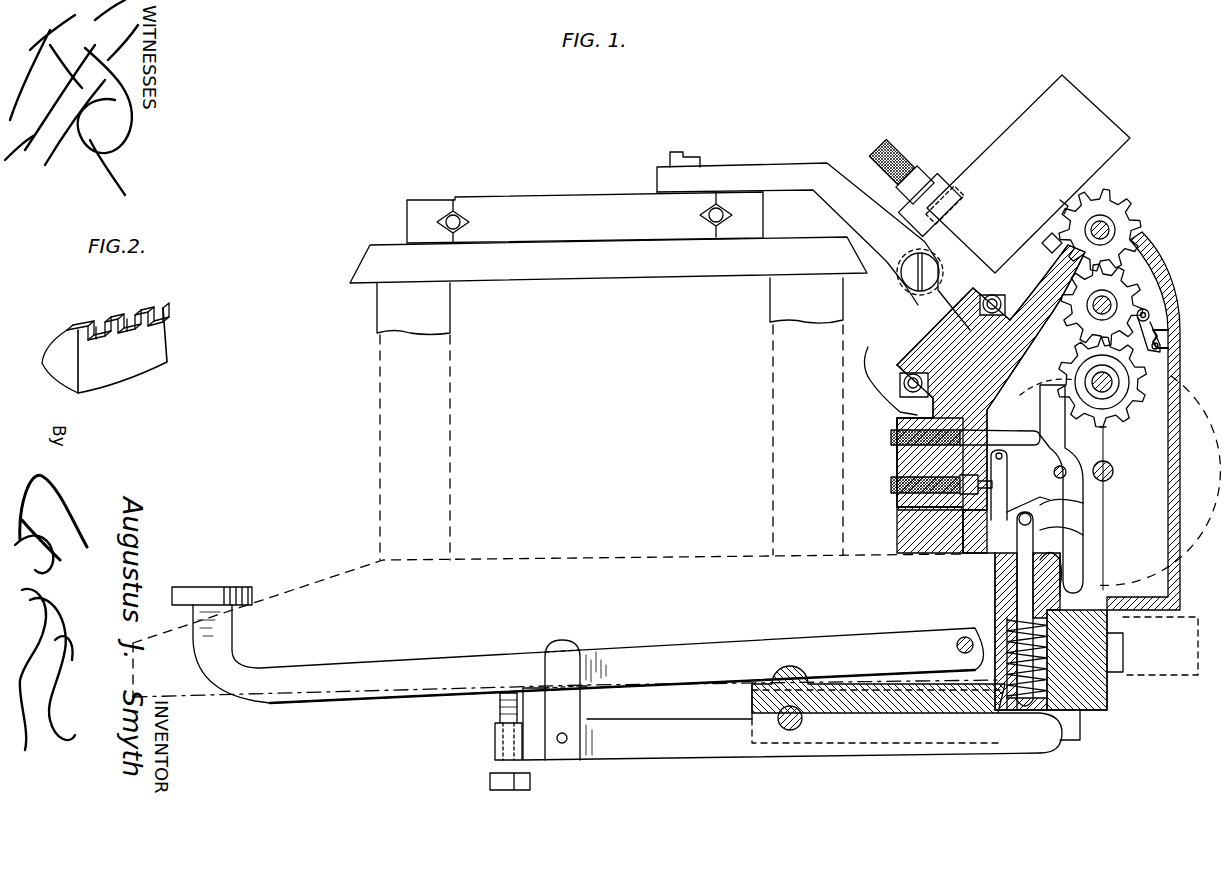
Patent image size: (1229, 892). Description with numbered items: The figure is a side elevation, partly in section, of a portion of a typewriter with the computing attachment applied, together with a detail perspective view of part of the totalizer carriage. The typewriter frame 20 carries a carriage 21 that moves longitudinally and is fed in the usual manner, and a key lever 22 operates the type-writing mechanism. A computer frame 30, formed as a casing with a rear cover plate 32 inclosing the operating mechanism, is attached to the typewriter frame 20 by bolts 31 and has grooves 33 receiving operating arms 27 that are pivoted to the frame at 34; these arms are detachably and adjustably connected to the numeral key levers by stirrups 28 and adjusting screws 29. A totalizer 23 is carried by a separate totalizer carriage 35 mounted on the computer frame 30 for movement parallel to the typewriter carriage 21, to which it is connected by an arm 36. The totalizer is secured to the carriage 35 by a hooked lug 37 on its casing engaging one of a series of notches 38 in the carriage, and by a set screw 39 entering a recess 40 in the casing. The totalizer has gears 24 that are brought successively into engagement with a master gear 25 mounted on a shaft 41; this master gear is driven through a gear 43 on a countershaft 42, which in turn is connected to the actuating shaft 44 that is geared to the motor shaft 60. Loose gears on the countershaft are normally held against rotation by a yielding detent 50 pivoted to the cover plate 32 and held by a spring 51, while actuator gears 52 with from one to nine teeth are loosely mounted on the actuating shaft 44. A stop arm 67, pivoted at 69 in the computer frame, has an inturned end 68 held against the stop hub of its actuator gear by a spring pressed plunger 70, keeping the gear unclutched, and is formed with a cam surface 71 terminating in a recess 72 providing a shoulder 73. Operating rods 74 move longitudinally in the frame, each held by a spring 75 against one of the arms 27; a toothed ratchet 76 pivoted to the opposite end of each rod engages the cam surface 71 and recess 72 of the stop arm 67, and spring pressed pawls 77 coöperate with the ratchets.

In FIG. 1, the typewriter frame 20 is at (375, 262).
In FIG. 1, the carriage 21 is at (511, 197).
In FIG. 1, the key lever 22 is at (385, 668).
In FIG. 1, the totalizer 23 is at (1005, 127).
In FIG. 1, the gears 24 is at (1058, 202).
In FIG. 1, the master gear 25 is at (1132, 202).
In FIG. 1, the arms 27 is at (735, 752).
In FIG. 1, the stirrups 28 is at (575, 755).
In FIG. 1, the adjusting screws 29 is at (490, 781).
In FIG. 1, the computer frame 30 is at (995, 590).
In FIG. 1, the bolts 31 is at (1125, 672).
In FIG. 1, the rear cover plate 32 is at (1183, 470).
In FIG. 1, the grooves 33 is at (1080, 736).
In FIG. 1, the pivot 34 is at (793, 731).
In FIG. 2, the totalizer carriage 35 is at (135, 366).
In FIG. 1, the totalizer carriage 35 is at (900, 326).
In FIG. 1, the arm 36 is at (775, 167).
In FIG. 1, the hooked lug 37 is at (1042, 246).
In FIG. 2, the notches 38 is at (134, 318).
In FIG. 1, the set screw 39 is at (882, 153).
In FIG. 1, the recess 40 is at (938, 205).
In FIG. 1, the shaft 41 is at (1112, 231).
In FIG. 1, the countershaft 42 is at (1112, 305).
In FIG. 1, the gear 43 is at (1138, 275).
In FIG. 1, the actuating shaft 44 is at (1112, 382).
In FIG. 1, the yielding detent 50 is at (1150, 318).
In FIG. 1, the spring 51 is at (1170, 338).
In FIG. 1, the actuator gears 52 is at (1118, 412).
In FIG. 1, the motor shaft 60 is at (1114, 471).
In FIG. 1, the stop arm 67 is at (1075, 500).
In FIG. 1, the inturned ends 68 is at (1052, 385).
In FIG. 1, the pivot 69 is at (1068, 476).
In FIG. 1, the spring pressed plungers 70 is at (998, 430).
In FIG. 1, the cam surfaces 71 is at (1085, 563).
In FIG. 1, the recesses 72 is at (1060, 510).
In FIG. 1, the shoulders 73 is at (1066, 535).
In FIG. 1, the operating rods 74 is at (1017, 572).
In FIG. 1, the spring 75 is at (1007, 628).
In FIG. 1, the ratchet 76 is at (990, 548).
In FIG. 1, the spring pressed pawls 77 is at (1007, 488).